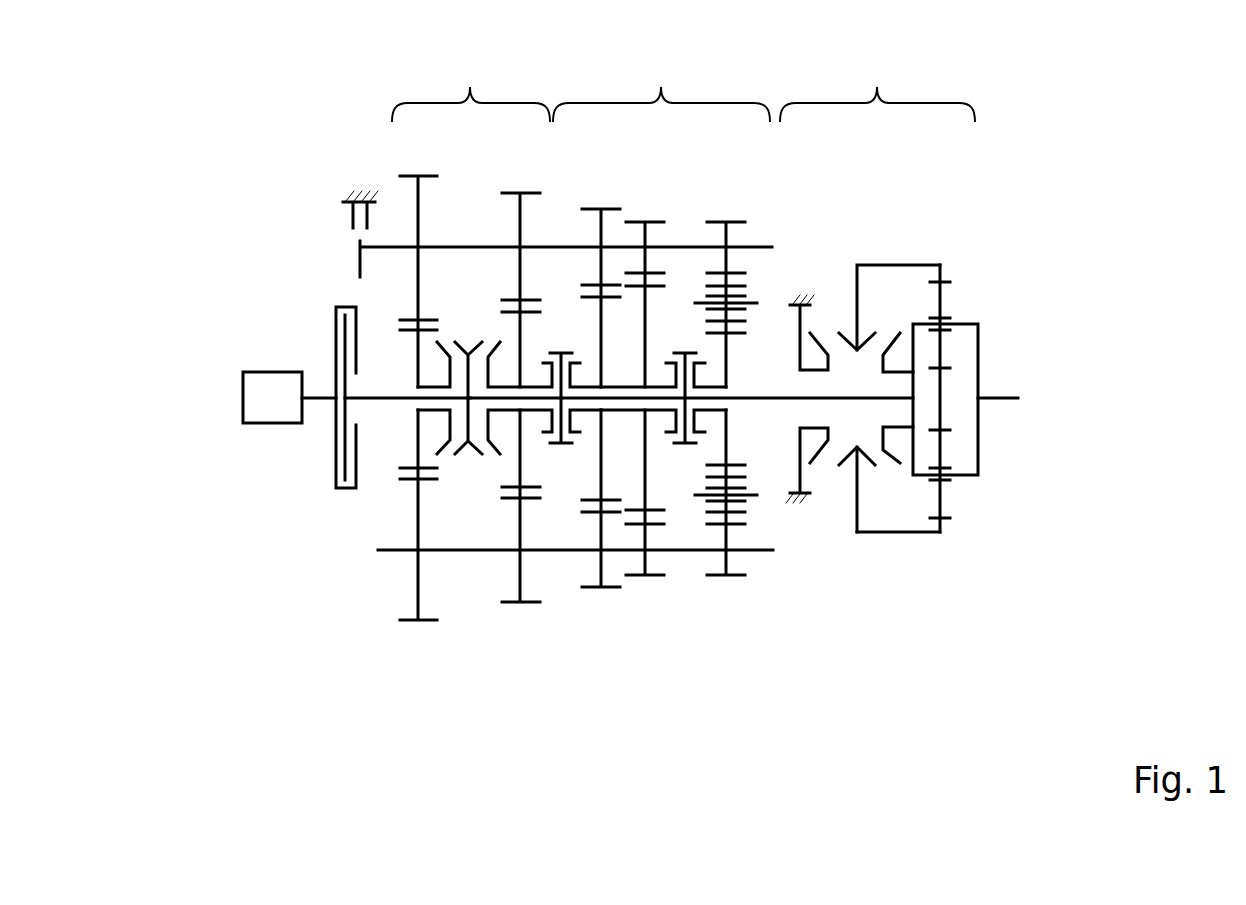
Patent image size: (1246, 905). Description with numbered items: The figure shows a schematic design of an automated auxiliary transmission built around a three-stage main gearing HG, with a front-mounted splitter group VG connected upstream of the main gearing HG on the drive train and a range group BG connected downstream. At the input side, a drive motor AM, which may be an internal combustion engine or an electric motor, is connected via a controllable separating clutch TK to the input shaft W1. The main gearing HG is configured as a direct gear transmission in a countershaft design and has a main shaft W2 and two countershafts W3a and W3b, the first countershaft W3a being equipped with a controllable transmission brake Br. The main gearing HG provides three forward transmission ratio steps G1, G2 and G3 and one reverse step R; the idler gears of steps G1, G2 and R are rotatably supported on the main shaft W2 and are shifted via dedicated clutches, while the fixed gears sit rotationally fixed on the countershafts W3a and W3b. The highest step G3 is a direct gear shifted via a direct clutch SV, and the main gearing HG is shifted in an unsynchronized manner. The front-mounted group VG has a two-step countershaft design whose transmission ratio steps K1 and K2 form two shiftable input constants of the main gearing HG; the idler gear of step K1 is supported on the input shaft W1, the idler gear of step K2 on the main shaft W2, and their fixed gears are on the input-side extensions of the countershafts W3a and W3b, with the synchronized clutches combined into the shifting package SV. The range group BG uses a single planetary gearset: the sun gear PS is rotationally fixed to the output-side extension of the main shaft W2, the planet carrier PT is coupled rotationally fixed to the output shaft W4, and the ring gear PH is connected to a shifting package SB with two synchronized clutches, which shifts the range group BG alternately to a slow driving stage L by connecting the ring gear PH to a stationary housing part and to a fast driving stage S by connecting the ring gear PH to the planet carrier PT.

The drive motor AM is at (267, 395).
The separating clutch TK is at (334, 301).
The input shaft W1 is at (388, 400).
The transmission brake Br is at (346, 211).
The first countershaft W3a is at (402, 245).
The second countershaft W3b is at (400, 553).
The first transmission ratio step K1 is at (418, 624).
The second transmission ratio step K2 is at (520, 606).
The third transmission ratio step G3 is at (532, 474).
The direct clutch / shifting package SV is at (468, 569).
The second transmission ratio step G2 is at (601, 591).
The first transmission ratio step G1 is at (645, 579).
The reverse transmission ratio step R is at (726, 579).
The main shaft W2 is at (755, 398).
The front-mounted group VG is at (471, 83).
The main gearing HG is at (661, 83).
The range group BG is at (877, 83).
The shifting package SB is at (857, 571).
The slow driving stage L is at (810, 465).
The fast driving stage S is at (866, 489).
The ring gear PH is at (900, 265).
The sun gear PS is at (940, 412).
The planet carrier PT is at (960, 323).
The output shaft W4 is at (1000, 398).